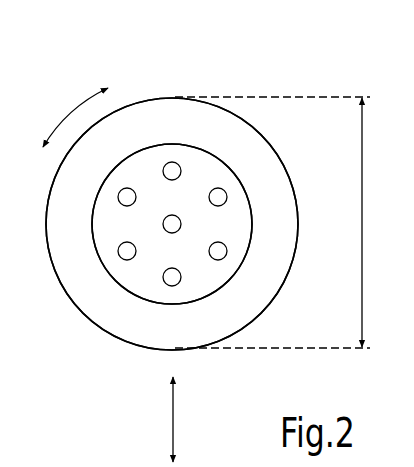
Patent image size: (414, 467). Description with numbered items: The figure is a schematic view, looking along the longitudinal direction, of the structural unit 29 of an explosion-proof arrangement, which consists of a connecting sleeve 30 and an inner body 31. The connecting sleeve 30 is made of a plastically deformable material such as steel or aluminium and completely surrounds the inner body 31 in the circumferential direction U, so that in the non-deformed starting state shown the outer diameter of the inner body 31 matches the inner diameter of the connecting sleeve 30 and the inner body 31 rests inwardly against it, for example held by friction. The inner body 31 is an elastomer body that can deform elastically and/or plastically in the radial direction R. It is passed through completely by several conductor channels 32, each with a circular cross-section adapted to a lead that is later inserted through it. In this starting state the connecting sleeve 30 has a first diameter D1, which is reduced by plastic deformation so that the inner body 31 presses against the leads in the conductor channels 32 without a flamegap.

The structural unit 29 is at (238, 87).
The connecting sleeve 30 is at (264, 278).
The inner body 31 is at (143, 165).
The conductor channel 32 is at (219, 250).
The circumferential direction U is at (68, 115).
The first diameter D1 is at (363, 217).
The radial direction R is at (173, 415).